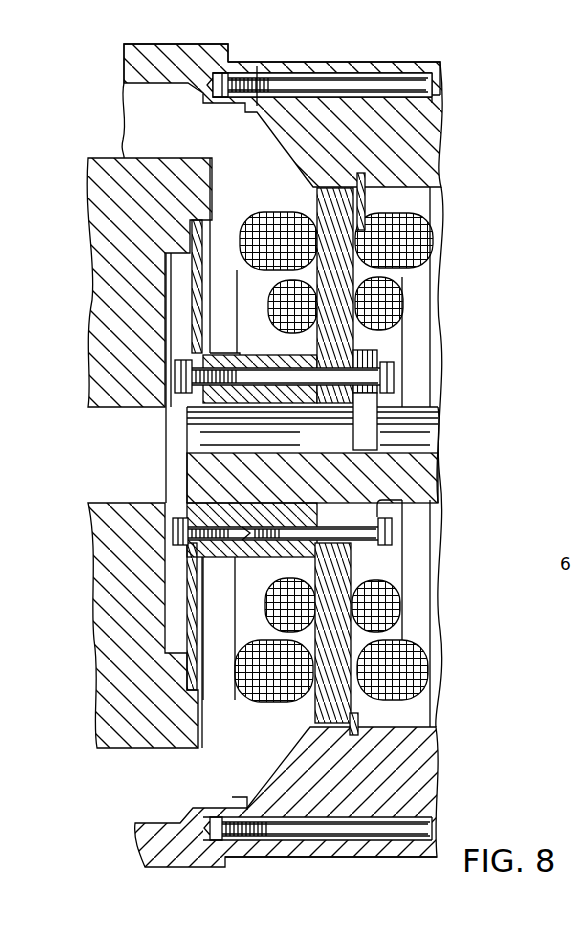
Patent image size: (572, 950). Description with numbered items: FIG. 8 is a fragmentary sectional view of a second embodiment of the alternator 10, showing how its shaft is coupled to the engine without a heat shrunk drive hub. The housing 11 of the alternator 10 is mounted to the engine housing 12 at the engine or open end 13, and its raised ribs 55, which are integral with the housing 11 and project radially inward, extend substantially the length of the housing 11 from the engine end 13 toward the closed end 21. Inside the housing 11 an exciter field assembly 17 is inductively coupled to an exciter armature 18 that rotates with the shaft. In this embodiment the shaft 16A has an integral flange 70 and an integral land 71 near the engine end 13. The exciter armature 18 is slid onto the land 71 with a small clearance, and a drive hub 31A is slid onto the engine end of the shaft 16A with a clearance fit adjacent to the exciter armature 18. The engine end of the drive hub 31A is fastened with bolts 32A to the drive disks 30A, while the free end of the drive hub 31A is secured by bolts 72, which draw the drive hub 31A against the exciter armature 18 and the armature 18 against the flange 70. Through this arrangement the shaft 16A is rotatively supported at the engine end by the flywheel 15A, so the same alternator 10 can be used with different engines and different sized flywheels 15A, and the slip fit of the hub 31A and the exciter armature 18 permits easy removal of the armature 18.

The alternator 10 is at (311, 60).
The housing 11 is at (380, 62).
The engine housing 12 is at (180, 44).
The engine end 13 is at (250, 856).
The flywheel 15A is at (120, 215).
The shaft 16A is at (423, 473).
The exciter field assembly 17 is at (365, 210).
The exciter armature 18 is at (366, 343).
The closed end 21 is at (404, 860).
The drive disks 30A is at (205, 240).
The drive hub 31A is at (190, 423).
The bolts 32A is at (170, 372).
The raised ribs 55 is at (422, 135).
The flange 70 is at (387, 408).
The land 71 is at (365, 421).
The bolts 72 is at (392, 378).